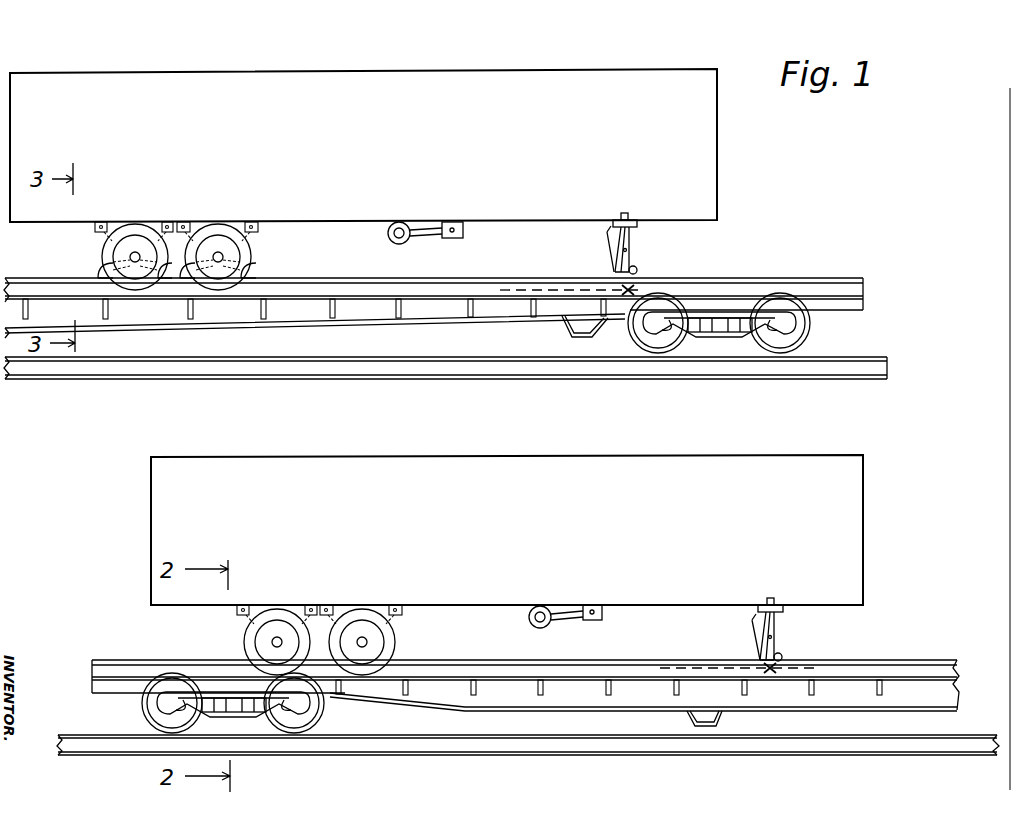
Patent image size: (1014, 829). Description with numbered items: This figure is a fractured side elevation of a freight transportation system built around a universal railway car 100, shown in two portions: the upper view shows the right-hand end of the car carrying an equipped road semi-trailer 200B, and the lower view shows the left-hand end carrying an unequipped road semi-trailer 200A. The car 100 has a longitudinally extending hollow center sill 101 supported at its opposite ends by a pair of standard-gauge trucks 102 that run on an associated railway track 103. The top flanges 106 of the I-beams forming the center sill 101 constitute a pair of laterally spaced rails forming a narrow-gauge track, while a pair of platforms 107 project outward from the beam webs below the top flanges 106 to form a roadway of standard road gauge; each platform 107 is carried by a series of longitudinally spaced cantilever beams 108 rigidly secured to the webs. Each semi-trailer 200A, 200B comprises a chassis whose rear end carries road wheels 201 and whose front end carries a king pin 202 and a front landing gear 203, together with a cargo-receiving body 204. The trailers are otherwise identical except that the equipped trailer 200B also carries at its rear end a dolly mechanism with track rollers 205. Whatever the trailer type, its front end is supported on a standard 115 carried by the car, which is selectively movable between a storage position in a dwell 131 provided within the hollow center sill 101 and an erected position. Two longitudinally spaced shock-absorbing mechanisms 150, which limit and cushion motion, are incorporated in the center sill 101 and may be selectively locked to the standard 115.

The railway car 100 is at (481, 487).
The center sill 101 is at (372, 322).
The trucks 102 is at (720, 338).
The railway track 103 is at (838, 362).
The top flanges 106 is at (350, 283).
The platforms 107 is at (383, 296).
The cantilever beams 108 is at (190, 308).
The standard 115 is at (645, 246).
The dwell 131 is at (574, 337).
The shock-absorbing mechanism 150 is at (656, 281).
The road semi-trailer of the first type 200A is at (507, 539).
The road semi-trailer of the second type 200B is at (363, 155).
The road wheels 201 is at (222, 240).
The king pin 202 is at (626, 214).
The front landing gear 203 is at (430, 222).
The body 204 is at (151, 530).
The track rollers 205 is at (100, 270).